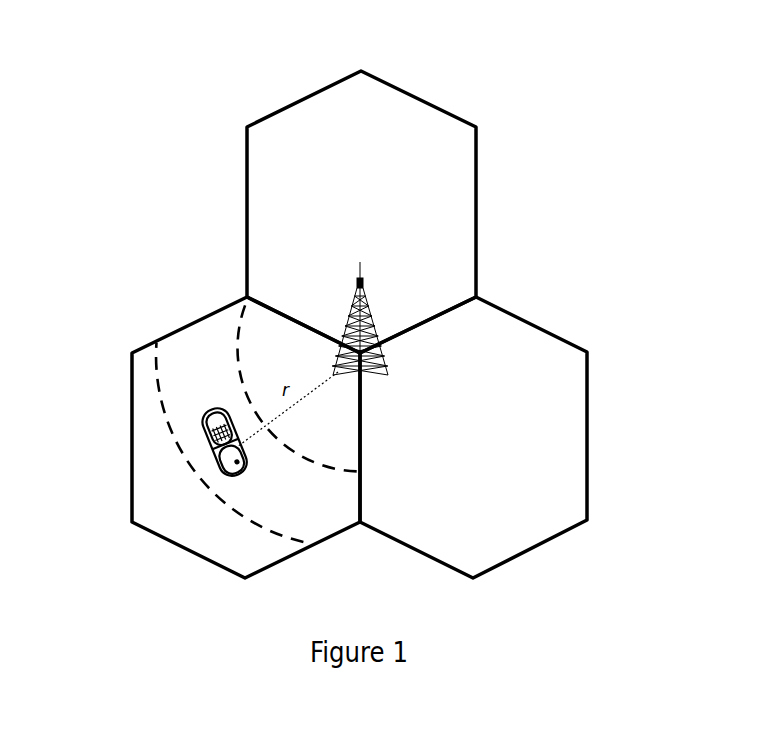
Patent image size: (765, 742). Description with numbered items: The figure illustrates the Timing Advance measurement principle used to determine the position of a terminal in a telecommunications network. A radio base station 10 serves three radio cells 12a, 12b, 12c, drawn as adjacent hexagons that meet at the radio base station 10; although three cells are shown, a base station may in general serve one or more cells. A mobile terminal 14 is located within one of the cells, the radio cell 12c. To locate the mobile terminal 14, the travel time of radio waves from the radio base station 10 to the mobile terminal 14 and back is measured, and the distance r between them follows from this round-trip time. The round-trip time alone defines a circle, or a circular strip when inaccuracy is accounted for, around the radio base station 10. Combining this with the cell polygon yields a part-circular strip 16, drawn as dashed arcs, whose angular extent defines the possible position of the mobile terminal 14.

The radio base station 10 is at (350, 317).
The radio cell 12a is at (402, 87).
The radio cell 12b is at (568, 343).
The radio cell 12c is at (132, 365).
The mobile terminal 14 is at (212, 463).
The part-circular strip 16 is at (207, 380).